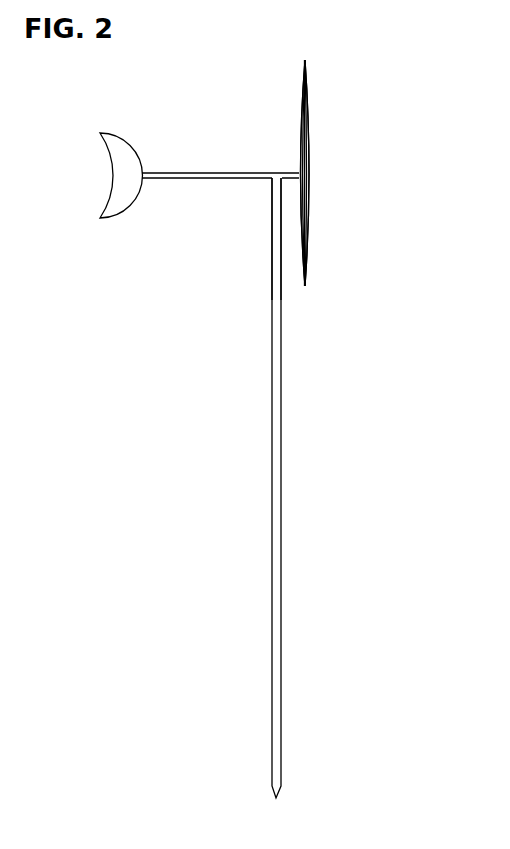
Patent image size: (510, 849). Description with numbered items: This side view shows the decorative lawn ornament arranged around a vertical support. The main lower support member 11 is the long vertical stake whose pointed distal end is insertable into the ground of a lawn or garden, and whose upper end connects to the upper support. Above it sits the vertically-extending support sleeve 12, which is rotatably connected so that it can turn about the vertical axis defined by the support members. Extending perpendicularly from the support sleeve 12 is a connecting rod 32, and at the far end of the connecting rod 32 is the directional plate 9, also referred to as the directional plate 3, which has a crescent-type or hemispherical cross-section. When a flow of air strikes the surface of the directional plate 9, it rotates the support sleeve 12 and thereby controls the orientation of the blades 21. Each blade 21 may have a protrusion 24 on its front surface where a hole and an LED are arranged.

The directional plate 9 is at (130, 164).
The connecting rod 32 is at (178, 173).
The blade 21 is at (310, 103).
The protrusion 24 is at (311, 128).
The directional plate 3 is at (310, 183).
The support sleeve 12 is at (279, 255).
The main lower support member 11 is at (277, 565).